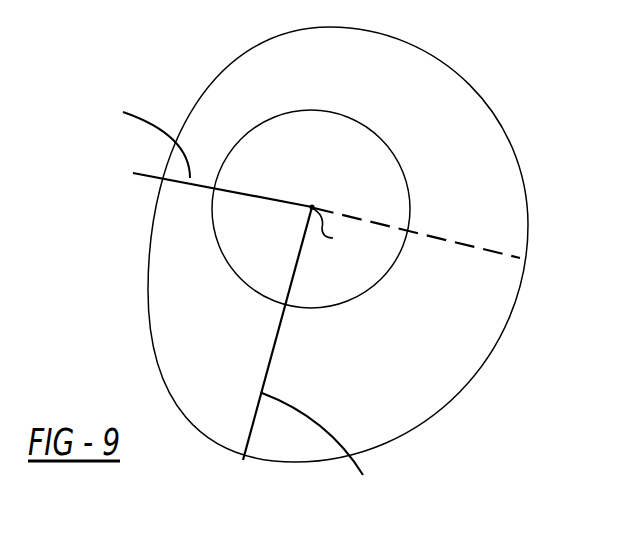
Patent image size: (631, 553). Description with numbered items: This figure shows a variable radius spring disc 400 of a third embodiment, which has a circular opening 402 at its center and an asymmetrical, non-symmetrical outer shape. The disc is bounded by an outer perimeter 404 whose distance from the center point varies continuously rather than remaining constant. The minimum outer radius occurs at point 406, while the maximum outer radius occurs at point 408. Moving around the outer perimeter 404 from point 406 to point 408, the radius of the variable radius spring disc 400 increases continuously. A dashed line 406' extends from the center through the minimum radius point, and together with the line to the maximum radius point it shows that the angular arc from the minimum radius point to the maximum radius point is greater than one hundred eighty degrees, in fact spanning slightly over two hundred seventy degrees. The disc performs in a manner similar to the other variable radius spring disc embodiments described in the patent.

The variable radius spring disc 400 is at (537, 117).
The circular opening 402 is at (405, 238).
The outer perimeter 404 is at (507, 332).
The point of minimum outer radius 406 is at (172, 177).
The dashed line 406' is at (457, 232).
The point of maximum outer radius 408 is at (243, 459).